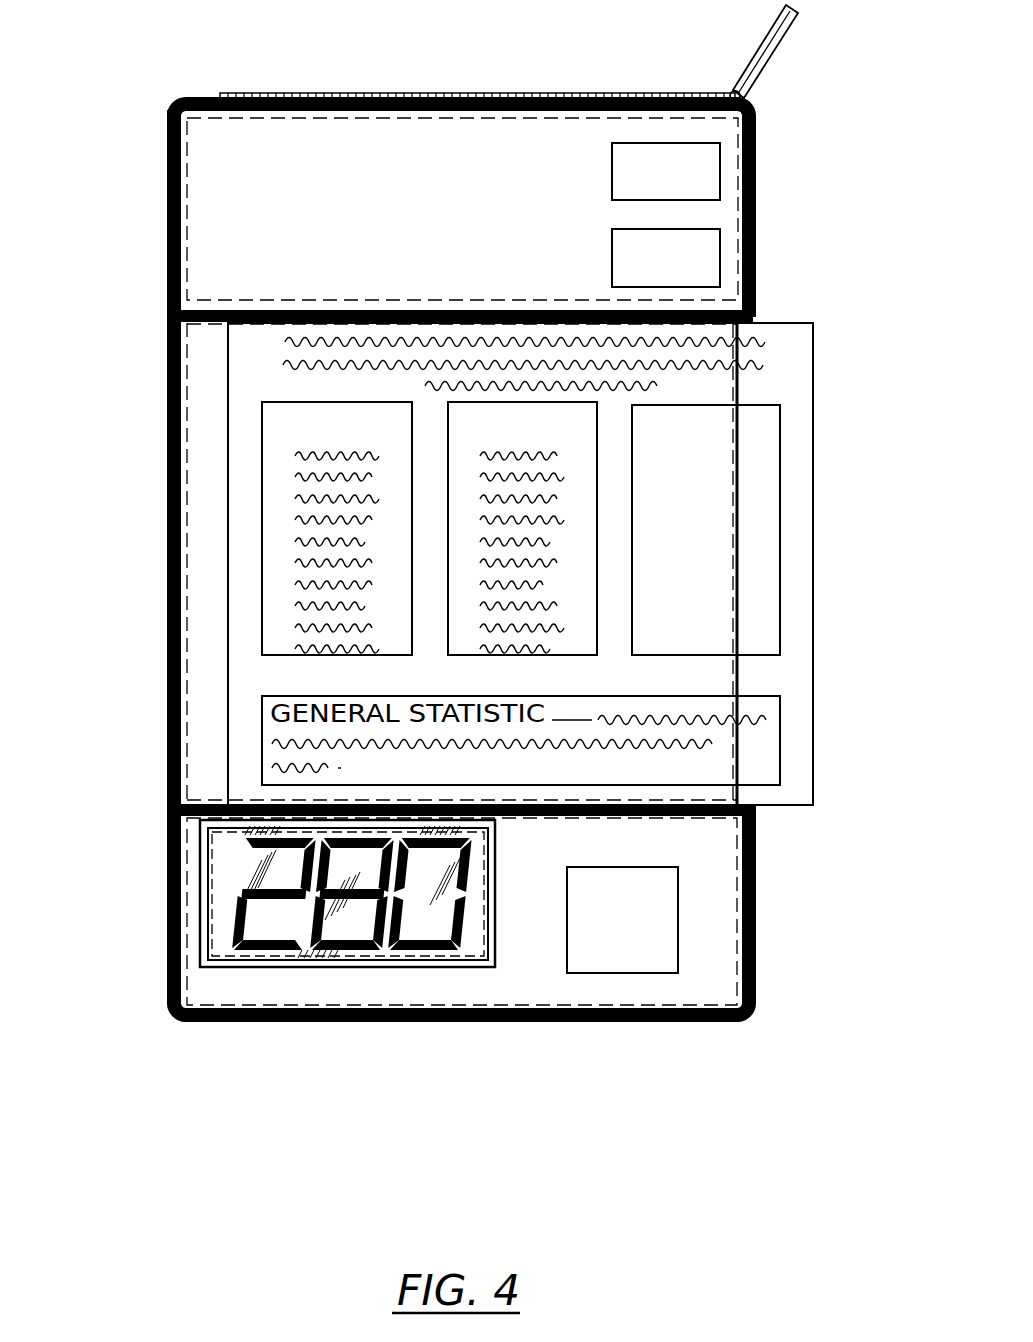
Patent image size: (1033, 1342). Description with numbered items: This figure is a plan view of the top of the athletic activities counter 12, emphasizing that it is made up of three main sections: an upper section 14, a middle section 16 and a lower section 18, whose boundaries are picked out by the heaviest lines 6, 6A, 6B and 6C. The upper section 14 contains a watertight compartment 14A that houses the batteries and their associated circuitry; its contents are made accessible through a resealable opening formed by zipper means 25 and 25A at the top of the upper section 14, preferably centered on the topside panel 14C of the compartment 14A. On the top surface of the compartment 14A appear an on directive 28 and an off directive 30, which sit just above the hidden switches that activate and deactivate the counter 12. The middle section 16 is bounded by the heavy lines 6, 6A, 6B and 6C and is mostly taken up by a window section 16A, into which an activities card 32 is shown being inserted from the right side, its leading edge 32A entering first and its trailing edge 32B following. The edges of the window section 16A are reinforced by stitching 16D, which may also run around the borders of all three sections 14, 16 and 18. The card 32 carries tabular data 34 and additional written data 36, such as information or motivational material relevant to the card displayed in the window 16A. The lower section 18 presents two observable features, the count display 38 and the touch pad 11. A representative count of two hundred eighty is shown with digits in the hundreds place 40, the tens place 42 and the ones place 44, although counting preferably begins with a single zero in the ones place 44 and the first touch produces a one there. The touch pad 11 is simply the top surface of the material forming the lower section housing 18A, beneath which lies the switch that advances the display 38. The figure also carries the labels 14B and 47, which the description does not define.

The heavy line 6 is at (757, 868).
The heavy line 6A is at (545, 305).
The heavy line 6B is at (595, 803).
The heavy line 6C is at (165, 693).
The touch pad 11 is at (663, 965).
The counter 12 is at (137, 504).
The upper section 14 is at (150, 228).
The watertight compartment 14A is at (230, 155).
The case bottom edge 14B is at (190, 1017).
The topside panel 14C is at (218, 95).
The middle section 16 is at (165, 592).
The window section 16A is at (793, 697).
The stitching 16D is at (185, 362).
The lower section 18 is at (145, 940).
The lower section housing 18A is at (728, 942).
The zipper means 25 is at (690, 92).
The zipper means 25A is at (770, 60).
The on directive 28 is at (710, 188).
The off directive 30 is at (705, 268).
The activities card 32 is at (798, 652).
The leading edge 32A is at (228, 392).
The trailing edge 32B is at (826, 433).
The tabular data 34 is at (745, 530).
The additional written data 36 is at (765, 350).
The count display 38 is at (230, 860).
The hundreds place 40 is at (257, 948).
The tens place 42 is at (335, 950).
The ones place 44 is at (455, 950).
The advance label 47 is at (500, 1000).